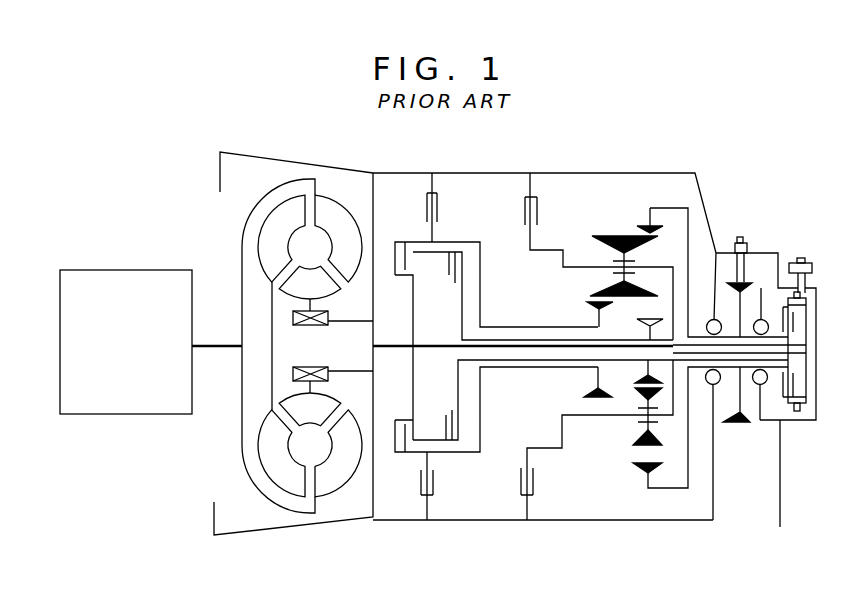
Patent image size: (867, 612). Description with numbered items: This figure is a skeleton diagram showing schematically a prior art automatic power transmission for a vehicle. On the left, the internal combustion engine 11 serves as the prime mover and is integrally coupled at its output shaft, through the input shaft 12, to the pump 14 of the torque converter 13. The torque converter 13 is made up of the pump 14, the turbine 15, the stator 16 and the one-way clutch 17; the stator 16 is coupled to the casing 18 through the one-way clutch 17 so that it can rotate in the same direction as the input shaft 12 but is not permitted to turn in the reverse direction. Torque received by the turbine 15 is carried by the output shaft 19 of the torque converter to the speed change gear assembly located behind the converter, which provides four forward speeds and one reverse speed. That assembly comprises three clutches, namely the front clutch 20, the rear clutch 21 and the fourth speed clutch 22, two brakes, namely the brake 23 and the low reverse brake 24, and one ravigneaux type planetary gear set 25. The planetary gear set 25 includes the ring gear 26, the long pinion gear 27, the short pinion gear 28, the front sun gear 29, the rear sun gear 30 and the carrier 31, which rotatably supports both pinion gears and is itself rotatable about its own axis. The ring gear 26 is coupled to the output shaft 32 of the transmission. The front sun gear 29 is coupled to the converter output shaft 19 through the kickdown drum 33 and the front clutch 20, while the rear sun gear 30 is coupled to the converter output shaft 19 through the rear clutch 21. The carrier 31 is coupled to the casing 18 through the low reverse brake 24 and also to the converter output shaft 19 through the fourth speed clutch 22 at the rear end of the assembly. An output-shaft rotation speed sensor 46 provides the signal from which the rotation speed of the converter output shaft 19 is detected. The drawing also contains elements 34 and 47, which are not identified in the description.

The internal combustion engine 11 is at (168, 270).
The input shaft 12 is at (216, 350).
The torque converter 13 is at (282, 178).
The pump 14 is at (334, 208).
The turbine 15 is at (272, 222).
The stator 16 is at (302, 273).
The one-way clutch 17 is at (293, 318).
The casing 18 is at (513, 173).
The output shaft of the torque converter 19 is at (389, 341).
The front clutch 20 is at (397, 455).
The rear clutch 21 is at (446, 275).
The fourth speed clutch 22 is at (795, 320).
The brake 23 is at (433, 480).
The low reverse brake 24 is at (533, 478).
The ravigneaux type planetary gear set 25 is at (622, 210).
The ring gear 26 is at (650, 478).
The long pinion gear 27 is at (614, 238).
The short pinion gear 28 is at (638, 455).
The front sun gear 29 is at (590, 391).
The rear sun gear 30 is at (640, 420).
The carrier 31 is at (667, 262).
The output shaft of the transmission 32 is at (748, 326).
The kickdown drum 33 is at (467, 240).
The ring gear 34 is at (741, 425).
The output-shaft rotation speed sensor 46 is at (814, 266).
The adjusting bolt 47 is at (746, 245).